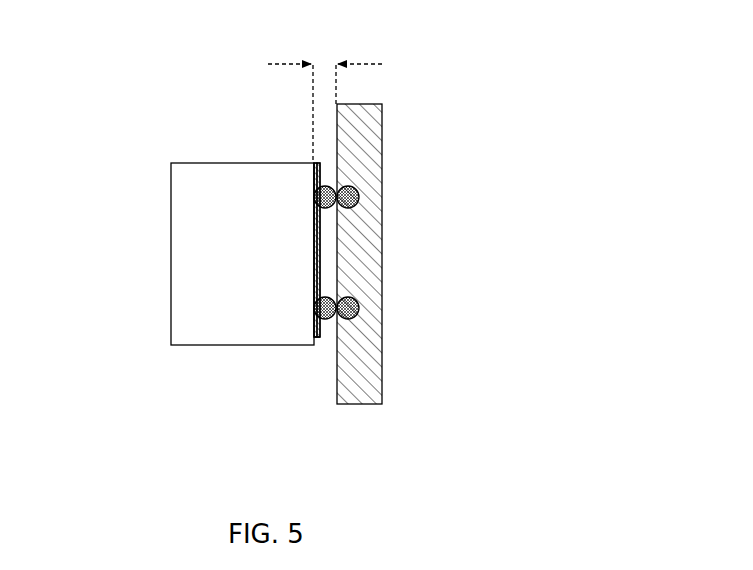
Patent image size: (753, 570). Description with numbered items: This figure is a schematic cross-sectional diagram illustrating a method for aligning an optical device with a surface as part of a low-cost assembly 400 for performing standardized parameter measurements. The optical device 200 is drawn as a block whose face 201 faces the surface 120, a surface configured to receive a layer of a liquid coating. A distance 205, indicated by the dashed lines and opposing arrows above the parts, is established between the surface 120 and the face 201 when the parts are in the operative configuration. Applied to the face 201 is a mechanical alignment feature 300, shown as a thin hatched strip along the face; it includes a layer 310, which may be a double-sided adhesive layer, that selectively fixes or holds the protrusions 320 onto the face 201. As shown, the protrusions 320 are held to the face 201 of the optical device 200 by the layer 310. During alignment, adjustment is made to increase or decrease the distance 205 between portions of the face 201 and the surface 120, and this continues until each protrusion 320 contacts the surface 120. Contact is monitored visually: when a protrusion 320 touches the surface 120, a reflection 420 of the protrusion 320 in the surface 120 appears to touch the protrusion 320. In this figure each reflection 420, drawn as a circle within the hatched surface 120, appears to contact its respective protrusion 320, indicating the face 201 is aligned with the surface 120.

The assembly 400 is at (107, 62).
The optical device 200 is at (180, 192).
The face 201 is at (316, 342).
The distance 205 is at (322, 60).
The mechanical alignment feature 300 is at (240, 195).
The layer 310 is at (314, 204).
The protrusions 320 is at (314, 233).
The surface 120 is at (337, 388).
The reflection 420 is at (353, 197).